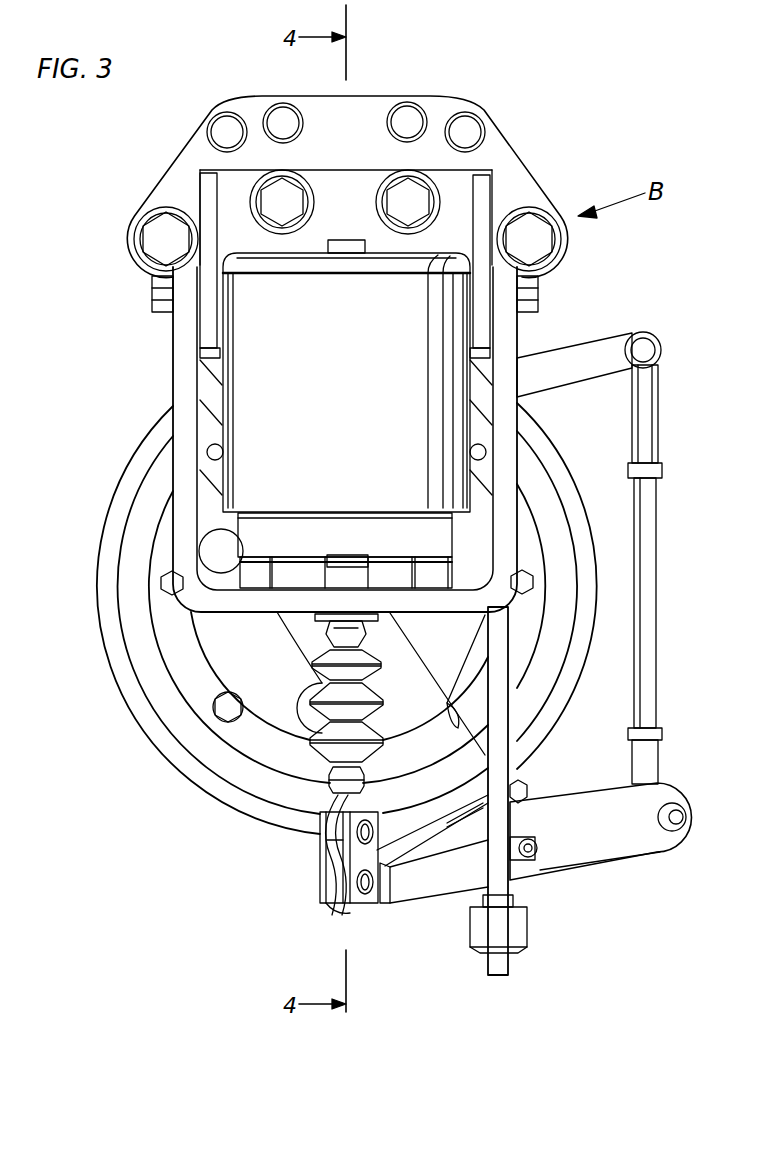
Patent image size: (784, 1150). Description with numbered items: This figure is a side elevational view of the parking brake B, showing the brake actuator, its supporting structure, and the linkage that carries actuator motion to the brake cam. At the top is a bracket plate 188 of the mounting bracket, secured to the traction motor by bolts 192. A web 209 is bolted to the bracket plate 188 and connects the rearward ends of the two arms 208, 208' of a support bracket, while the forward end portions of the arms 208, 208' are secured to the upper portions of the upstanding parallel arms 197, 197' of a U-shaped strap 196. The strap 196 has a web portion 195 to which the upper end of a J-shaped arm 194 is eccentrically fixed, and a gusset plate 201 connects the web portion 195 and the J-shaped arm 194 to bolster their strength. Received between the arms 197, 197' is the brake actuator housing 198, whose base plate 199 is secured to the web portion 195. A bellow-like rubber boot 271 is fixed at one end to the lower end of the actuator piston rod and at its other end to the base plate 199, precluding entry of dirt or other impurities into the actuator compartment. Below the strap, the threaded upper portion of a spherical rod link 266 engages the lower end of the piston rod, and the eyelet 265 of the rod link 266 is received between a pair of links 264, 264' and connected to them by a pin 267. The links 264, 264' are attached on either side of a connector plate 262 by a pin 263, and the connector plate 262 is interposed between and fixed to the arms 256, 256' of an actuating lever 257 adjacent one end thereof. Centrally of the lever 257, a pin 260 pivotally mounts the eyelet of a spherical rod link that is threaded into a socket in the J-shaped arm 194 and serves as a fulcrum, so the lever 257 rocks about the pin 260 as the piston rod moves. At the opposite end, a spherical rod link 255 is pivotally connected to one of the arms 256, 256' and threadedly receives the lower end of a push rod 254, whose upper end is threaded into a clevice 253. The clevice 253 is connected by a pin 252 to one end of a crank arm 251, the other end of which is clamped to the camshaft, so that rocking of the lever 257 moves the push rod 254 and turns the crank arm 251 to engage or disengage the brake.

The bracket plate 188 is at (353, 98).
The bolts 192 is at (283, 103).
The J-shaped arm 194 is at (502, 932).
The web portion 195 is at (243, 607).
The U-shaped strap 196 is at (160, 473).
The arm 197 is at (300, 439).
The arm 197' is at (538, 640).
The brake actuator housing 198 is at (348, 385).
The base plate 199 is at (431, 580).
The gusset plate 201 is at (438, 678).
The arm 208 is at (157, 255).
The arm 208' is at (534, 242).
The web 209 is at (340, 178).
The crank arm 251 is at (594, 370).
The pin 252 is at (650, 350).
The clevice 253 is at (652, 412).
The push rod 254 is at (655, 542).
The spherical rod link 255 is at (656, 753).
The arm 256 is at (482, 834).
The arm 256' is at (600, 869).
The actuating lever 257 is at (600, 837).
The pin 260 is at (533, 853).
The connector plate 262 is at (386, 903).
The pin 263 is at (360, 895).
The link 264 is at (321, 857).
The link 264' is at (431, 818).
The eyelet 265 is at (327, 840).
The spherical rod link 266 is at (331, 793).
The pin 267 is at (368, 830).
The bellow-like rubber boot 271 is at (308, 670).